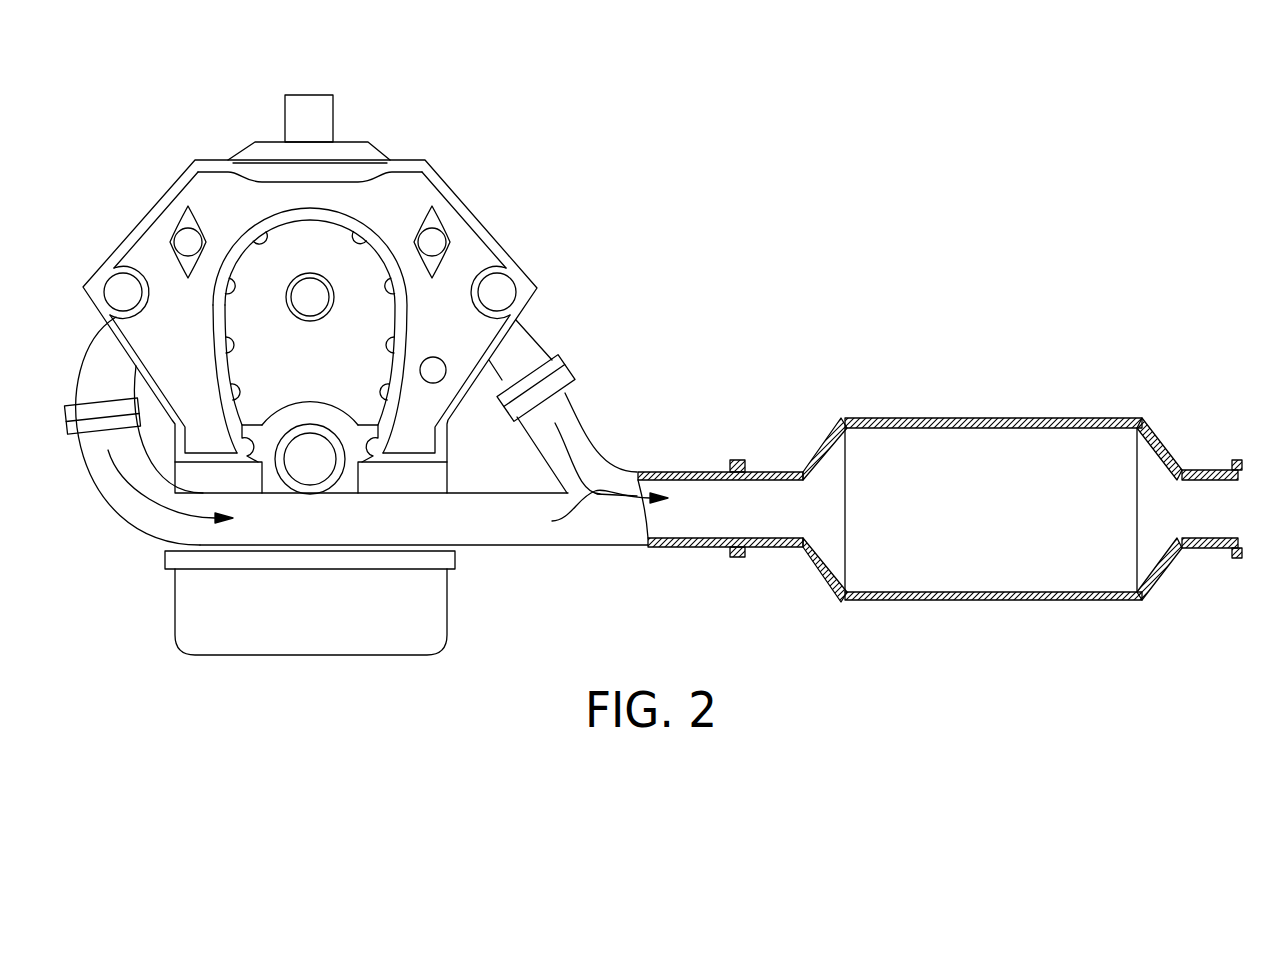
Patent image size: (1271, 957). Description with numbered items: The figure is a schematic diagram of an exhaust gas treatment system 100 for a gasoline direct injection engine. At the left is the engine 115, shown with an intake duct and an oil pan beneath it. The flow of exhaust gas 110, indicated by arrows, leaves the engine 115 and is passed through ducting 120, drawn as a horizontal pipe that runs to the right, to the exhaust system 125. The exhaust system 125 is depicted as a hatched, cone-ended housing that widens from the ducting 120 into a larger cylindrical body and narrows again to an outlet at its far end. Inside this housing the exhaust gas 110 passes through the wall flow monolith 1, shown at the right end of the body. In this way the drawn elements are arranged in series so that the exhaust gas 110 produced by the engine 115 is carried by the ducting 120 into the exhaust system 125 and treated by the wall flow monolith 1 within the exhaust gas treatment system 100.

The engine 115 is at (192, 162).
The exhaust gas 110 is at (143, 495).
The ducting 120 is at (488, 547).
The exhaust system 125 is at (812, 558).
The exhaust gas treatment system 100 is at (1013, 364).
The wall flow monolith 1 is at (1155, 500).